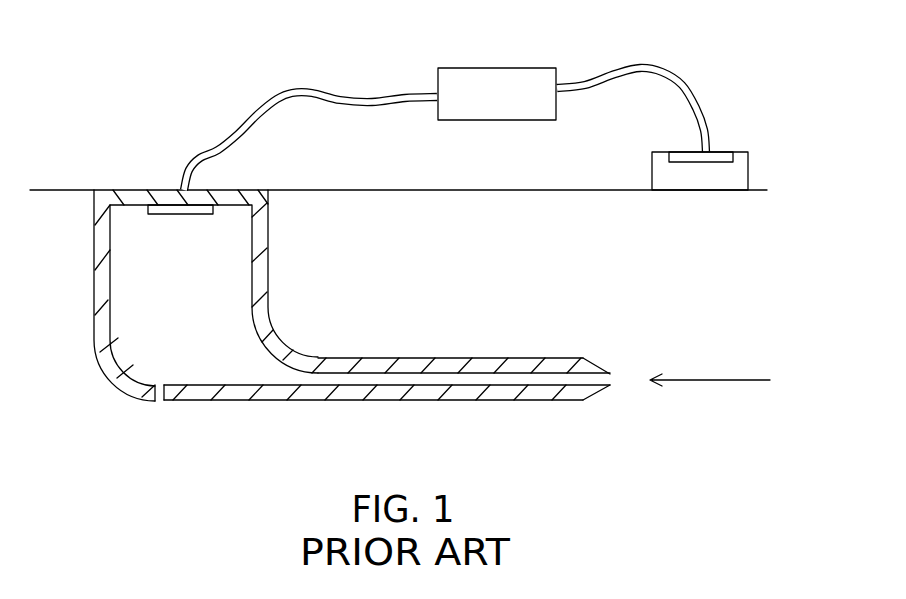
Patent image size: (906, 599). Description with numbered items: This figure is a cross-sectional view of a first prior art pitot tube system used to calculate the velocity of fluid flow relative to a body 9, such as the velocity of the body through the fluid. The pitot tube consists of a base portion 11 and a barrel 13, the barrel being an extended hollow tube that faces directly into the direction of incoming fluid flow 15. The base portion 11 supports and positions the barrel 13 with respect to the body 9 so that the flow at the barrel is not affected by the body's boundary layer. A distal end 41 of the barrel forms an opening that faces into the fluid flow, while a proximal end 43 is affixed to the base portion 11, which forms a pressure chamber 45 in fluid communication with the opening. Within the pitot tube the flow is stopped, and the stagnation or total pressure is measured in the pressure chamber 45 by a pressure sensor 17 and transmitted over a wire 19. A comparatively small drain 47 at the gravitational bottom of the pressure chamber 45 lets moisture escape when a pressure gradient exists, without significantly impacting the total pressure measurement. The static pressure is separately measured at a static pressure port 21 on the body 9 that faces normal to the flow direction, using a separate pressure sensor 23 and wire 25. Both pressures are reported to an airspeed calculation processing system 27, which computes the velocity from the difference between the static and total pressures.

The body 9 is at (572, 178).
The base portion 11 is at (268, 264).
The barrel 13 is at (483, 358).
The direction of incoming fluid flow 15 is at (710, 380).
The pressure sensor 17 is at (160, 206).
The wire 19 is at (250, 122).
The static pressure port 21 is at (695, 190).
The pressure sensor 23 is at (723, 152).
The wire 25 is at (678, 115).
The airspeed calculation processing system 27 is at (495, 68).
The distal end 41 is at (610, 378).
The proximal end 43 is at (385, 395).
The pressure chamber 45 is at (168, 278).
The drain 47 is at (162, 400).